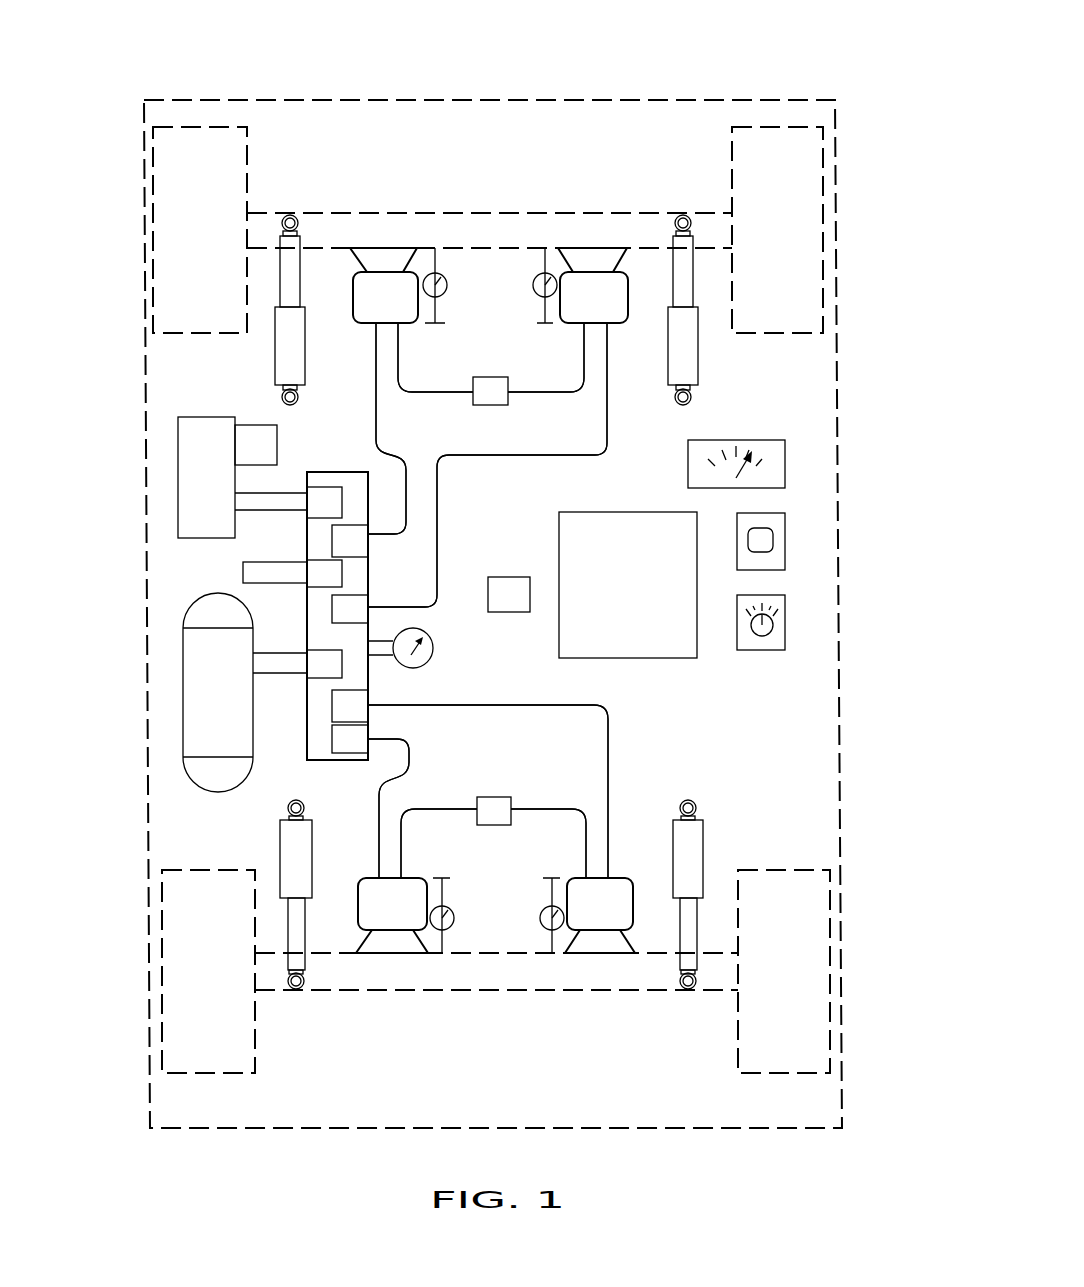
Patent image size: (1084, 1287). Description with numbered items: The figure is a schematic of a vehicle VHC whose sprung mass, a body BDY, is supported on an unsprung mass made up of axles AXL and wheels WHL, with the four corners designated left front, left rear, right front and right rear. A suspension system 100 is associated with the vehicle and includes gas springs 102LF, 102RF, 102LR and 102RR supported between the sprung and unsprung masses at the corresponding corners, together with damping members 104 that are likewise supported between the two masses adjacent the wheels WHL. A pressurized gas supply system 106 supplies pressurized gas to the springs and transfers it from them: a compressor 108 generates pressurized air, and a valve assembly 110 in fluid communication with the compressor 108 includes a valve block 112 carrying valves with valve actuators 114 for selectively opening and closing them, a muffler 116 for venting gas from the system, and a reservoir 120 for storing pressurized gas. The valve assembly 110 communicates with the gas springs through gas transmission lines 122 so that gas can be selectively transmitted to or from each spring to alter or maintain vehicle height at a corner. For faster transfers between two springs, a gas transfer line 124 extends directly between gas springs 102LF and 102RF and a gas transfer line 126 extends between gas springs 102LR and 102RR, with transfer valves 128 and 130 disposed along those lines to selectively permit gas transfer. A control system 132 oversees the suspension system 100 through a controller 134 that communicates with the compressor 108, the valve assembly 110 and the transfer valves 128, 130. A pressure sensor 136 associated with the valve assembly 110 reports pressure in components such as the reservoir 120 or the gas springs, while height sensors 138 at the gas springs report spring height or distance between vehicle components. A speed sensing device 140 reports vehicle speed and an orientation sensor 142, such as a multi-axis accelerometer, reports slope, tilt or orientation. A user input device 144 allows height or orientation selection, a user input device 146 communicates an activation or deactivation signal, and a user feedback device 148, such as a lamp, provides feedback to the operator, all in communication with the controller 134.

The vehicle VHC is at (765, 62).
The body BDY is at (570, 100).
The wheels WHL is at (170, 190).
The axles AXL is at (490, 213).
The suspension system 100 is at (795, 400).
The left front gas spring 102LF is at (385, 288).
The right front gas spring 102RF is at (598, 290).
The left rear gas spring 102LR is at (392, 915).
The right rear gas spring 102RR is at (603, 915).
The damping members 104 is at (290, 352).
The pressurized gas supply system 106 is at (195, 565).
The compressor 108 is at (195, 463).
The valve assembly 110 is at (305, 628).
The valve block 112 is at (365, 472).
The valve actuators 114 is at (340, 572).
The muffler 116 is at (250, 573).
The reservoir 120 is at (198, 735).
The gas transmission lines 122 is at (370, 405).
The gas transfer line 124 is at (418, 385).
The gas transfer line 126 is at (422, 805).
The transfer valve 128 is at (488, 390).
The transfer valve 130 is at (493, 805).
The control system 132 is at (700, 690).
The controller 134 is at (648, 589).
The pressure sensor 136 is at (432, 655).
The height sensors 138 is at (533, 285).
The speed sensing device 140 is at (775, 463).
The orientation sensor 142 is at (512, 577).
The user input device 144 is at (775, 623).
The user input device 146 is at (775, 558).
The user feedback device 148 is at (762, 540).